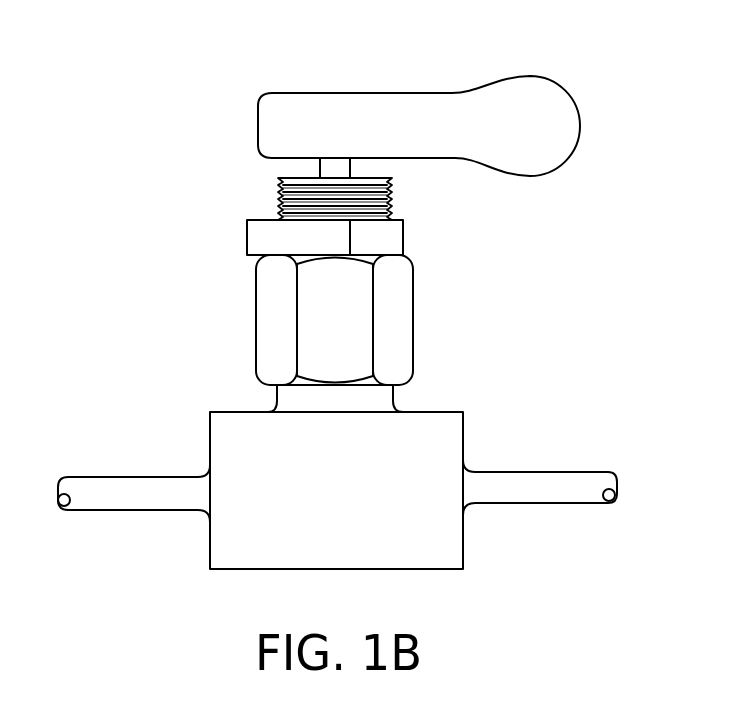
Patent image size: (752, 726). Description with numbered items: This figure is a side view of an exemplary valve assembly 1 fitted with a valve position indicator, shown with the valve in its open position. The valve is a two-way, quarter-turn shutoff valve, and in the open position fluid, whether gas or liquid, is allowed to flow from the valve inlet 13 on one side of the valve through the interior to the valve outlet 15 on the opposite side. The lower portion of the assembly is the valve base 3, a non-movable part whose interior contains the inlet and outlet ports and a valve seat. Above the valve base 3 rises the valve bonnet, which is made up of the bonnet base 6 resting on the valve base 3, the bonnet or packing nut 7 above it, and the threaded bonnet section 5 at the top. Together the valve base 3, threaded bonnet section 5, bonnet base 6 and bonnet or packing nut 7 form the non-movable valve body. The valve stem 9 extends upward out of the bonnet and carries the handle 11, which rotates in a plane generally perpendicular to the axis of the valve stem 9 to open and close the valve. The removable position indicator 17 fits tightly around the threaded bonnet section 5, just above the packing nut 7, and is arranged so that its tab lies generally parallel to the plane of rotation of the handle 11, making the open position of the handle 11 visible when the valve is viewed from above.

The valve assembly 1 is at (135, 178).
The valve base 3 is at (210, 543).
The threaded bonnet section 5 is at (392, 195).
The bonnet base 6 is at (290, 396).
The bonnet or packing nut 7 is at (395, 316).
The valve stem 9 is at (320, 160).
The handle 11 is at (440, 93).
The valve inlet 13 is at (133, 477).
The valve outlet 15 is at (530, 482).
The removable position indicator 17 is at (247, 238).